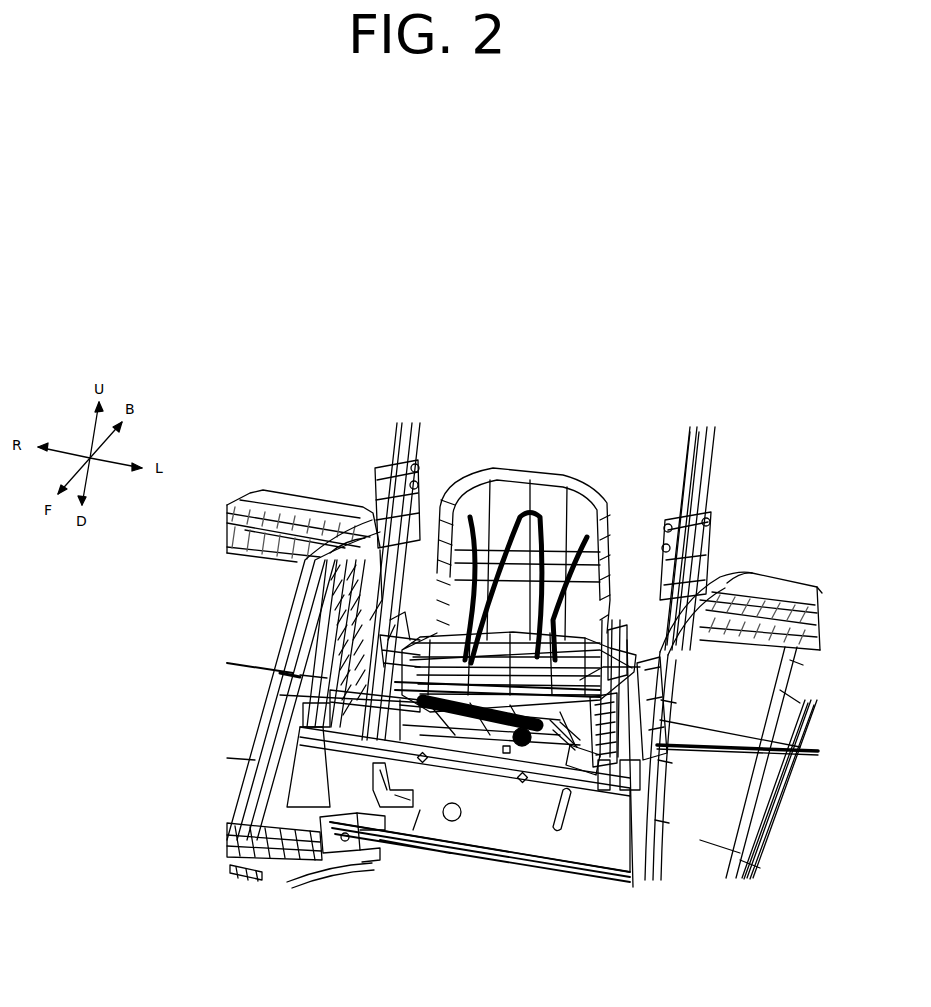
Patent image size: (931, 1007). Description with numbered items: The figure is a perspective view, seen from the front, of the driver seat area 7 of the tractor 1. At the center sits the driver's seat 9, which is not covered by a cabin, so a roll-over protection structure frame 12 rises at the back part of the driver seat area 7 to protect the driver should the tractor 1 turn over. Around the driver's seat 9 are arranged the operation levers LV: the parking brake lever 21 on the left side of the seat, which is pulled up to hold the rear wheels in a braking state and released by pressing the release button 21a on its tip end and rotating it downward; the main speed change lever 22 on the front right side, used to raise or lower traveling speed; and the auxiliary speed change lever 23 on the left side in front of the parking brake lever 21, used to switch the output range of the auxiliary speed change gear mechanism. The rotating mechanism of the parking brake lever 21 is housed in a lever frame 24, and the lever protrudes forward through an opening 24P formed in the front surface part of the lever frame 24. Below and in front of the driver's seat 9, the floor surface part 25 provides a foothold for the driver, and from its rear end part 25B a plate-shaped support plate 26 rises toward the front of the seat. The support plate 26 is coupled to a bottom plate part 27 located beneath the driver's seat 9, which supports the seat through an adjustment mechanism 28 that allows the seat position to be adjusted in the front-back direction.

The tractor 1 is at (803, 441).
The driver seat area 7 is at (515, 452).
The driver's seat 9 is at (575, 500).
The roll-over protection structure (ROPS) frame 12 is at (707, 483).
The parking brake lever 21 is at (632, 780).
The release button 21a is at (607, 683).
The main speed change lever 22 is at (385, 610).
The auxiliary speed change lever 23 is at (620, 717).
The lever frame 24 is at (640, 657).
The opening 24P is at (815, 751).
The floor surface part 25 is at (280, 858).
The rear end part 25B is at (232, 858).
The support plate 26 is at (393, 868).
The bottom plate part 27 is at (553, 763).
The adjustment mechanism 28 is at (430, 699).
The operation levers LV is at (546, 935).